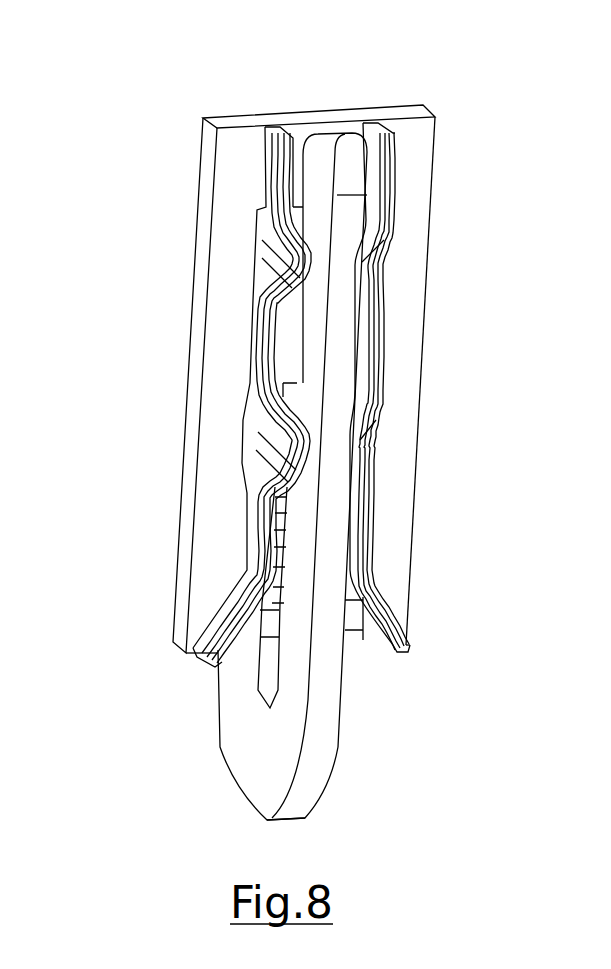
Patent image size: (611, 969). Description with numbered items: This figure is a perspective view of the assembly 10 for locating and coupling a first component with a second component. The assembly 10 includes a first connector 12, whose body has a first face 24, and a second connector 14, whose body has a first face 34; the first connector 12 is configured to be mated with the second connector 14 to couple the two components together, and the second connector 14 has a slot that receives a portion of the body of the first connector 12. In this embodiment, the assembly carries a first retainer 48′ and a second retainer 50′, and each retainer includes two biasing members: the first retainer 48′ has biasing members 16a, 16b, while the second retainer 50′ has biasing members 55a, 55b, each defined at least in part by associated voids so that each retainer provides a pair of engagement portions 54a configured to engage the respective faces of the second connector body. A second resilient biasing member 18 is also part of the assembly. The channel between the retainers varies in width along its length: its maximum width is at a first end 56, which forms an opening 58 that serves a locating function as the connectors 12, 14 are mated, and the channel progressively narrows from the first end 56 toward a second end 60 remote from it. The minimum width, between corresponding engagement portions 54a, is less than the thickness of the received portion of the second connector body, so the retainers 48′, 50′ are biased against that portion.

The assembly 10 is at (475, 128).
The first connector 12 is at (205, 160).
The second connector 14 is at (332, 685).
The biasing member 16a is at (251, 241).
The biasing member 16b is at (239, 463).
The second resilient biasing member 18 is at (280, 583).
The first face 24 is at (408, 215).
The first face 34 is at (247, 723).
The first retainer 48′ is at (283, 128).
The second retainer 50′ is at (381, 125).
The engagement portion 54a is at (323, 265).
The biasing member 55a is at (391, 251).
The biasing member 55b is at (381, 425).
The first end 56 is at (440, 612).
The opening 58 is at (372, 640).
The second end 60 is at (365, 82).